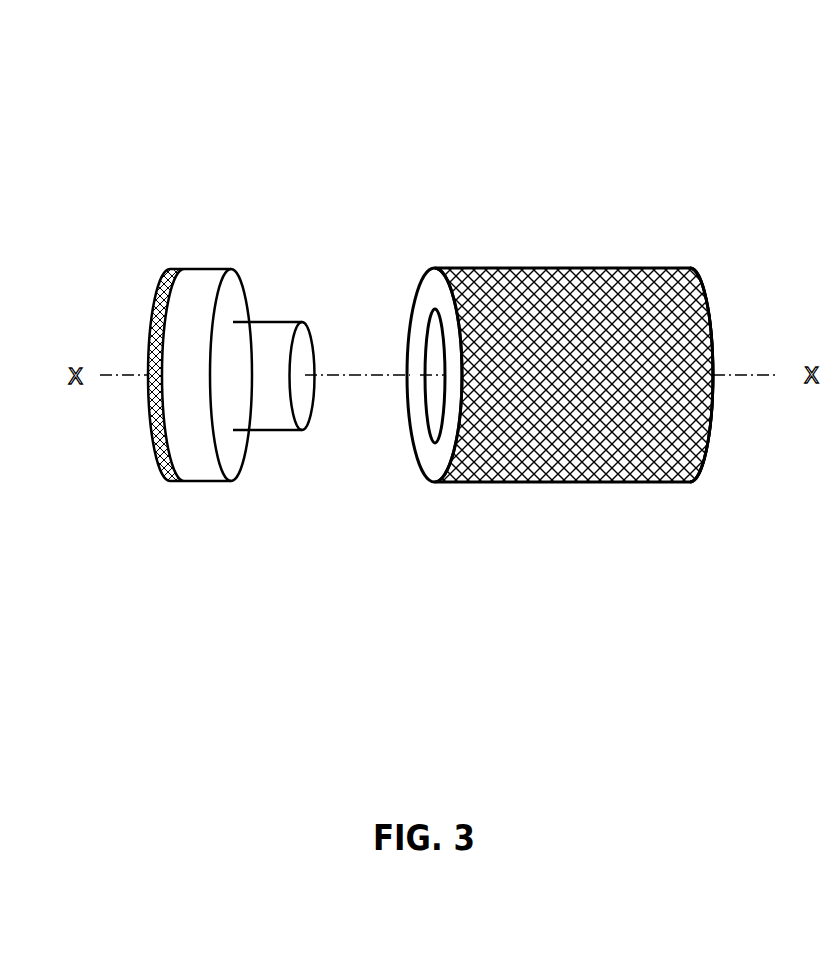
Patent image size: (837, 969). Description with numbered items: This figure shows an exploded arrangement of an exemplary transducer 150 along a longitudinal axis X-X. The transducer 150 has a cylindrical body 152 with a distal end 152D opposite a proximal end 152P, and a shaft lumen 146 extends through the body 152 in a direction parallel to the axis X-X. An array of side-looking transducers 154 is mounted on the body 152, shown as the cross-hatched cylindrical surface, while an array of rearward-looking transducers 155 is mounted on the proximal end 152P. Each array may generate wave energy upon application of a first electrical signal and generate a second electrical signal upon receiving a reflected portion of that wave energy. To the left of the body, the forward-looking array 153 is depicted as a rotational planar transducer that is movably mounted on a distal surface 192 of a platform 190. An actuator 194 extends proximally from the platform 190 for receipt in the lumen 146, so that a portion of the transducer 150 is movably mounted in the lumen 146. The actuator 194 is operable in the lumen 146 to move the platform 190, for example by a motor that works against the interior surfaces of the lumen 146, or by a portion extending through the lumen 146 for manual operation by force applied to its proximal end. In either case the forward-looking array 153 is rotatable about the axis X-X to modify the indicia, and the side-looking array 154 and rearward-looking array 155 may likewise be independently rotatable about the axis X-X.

The transducer 150 is at (588, 122).
The body 152 is at (566, 448).
The distal end 152D is at (432, 260).
The proximal end 152P is at (690, 260).
The array of side-looking transducers 154 is at (592, 314).
The array of rearward-looking transducers 155 is at (699, 482).
The shaft lumen 146 is at (442, 388).
The platform 190 is at (166, 230).
The distal surface 192 is at (185, 445).
The array of forward-looking transducers 153 is at (148, 402).
The actuator 194 is at (268, 338).